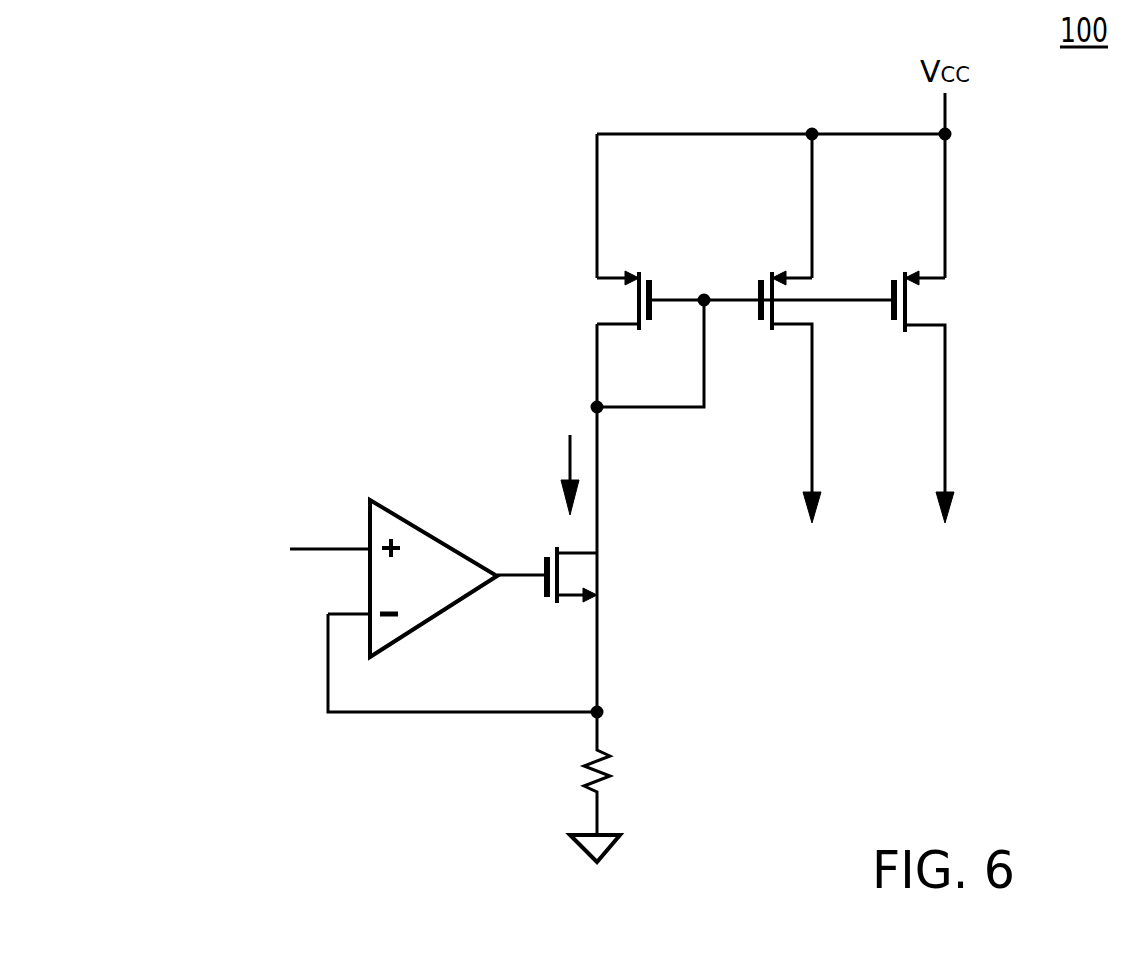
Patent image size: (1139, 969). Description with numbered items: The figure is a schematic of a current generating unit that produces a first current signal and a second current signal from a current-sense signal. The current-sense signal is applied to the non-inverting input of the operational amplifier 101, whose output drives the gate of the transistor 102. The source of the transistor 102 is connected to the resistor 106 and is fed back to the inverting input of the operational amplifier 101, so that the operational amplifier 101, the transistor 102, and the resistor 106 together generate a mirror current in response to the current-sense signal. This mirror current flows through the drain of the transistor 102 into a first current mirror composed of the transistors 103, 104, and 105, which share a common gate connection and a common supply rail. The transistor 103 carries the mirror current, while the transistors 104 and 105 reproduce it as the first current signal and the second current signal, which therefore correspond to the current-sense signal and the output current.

The operational amplifier 101 is at (430, 530).
The transistor 102 is at (598, 572).
The transistor 103 is at (600, 298).
The transistor 104 is at (765, 273).
The transistor 105 is at (943, 300).
The resistor 106 is at (612, 768).